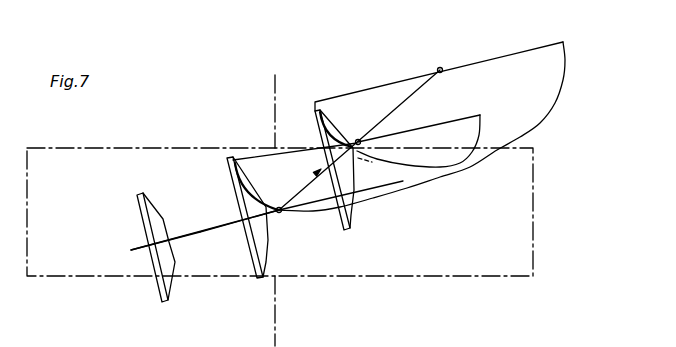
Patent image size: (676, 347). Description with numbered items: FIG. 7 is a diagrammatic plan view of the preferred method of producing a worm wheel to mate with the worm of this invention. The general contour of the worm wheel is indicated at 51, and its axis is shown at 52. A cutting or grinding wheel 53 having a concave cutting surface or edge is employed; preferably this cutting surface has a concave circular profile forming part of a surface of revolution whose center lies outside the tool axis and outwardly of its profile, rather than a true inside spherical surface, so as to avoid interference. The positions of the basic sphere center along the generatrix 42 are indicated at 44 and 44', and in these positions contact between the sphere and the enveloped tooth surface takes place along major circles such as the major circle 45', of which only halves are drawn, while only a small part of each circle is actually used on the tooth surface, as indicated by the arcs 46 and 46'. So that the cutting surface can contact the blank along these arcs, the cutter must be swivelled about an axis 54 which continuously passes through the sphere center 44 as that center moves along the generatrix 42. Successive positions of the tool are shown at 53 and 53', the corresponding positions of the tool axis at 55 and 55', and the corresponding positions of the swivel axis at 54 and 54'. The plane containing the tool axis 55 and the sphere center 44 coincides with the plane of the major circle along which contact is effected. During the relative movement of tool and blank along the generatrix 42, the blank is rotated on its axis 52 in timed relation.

The generatrix 42 is at (407, 95).
The sphere center 44 is at (293, 223).
The sphere center 44' is at (382, 132).
The major circle 45' is at (418, 155).
The arc 46 is at (205, 233).
The arc 46' is at (295, 176).
The worm wheel contour 51 is at (122, 148).
The worm wheel axis 52 is at (275, 90).
The cutting or grinding wheel 53 is at (150, 256).
The cutting or grinding wheel 53' is at (263, 217).
The swivel axis 54 is at (345, 200).
The swivel axis 54' is at (419, 122).
The tool axis 55 is at (149, 246).
The tool axis 55' is at (239, 217).